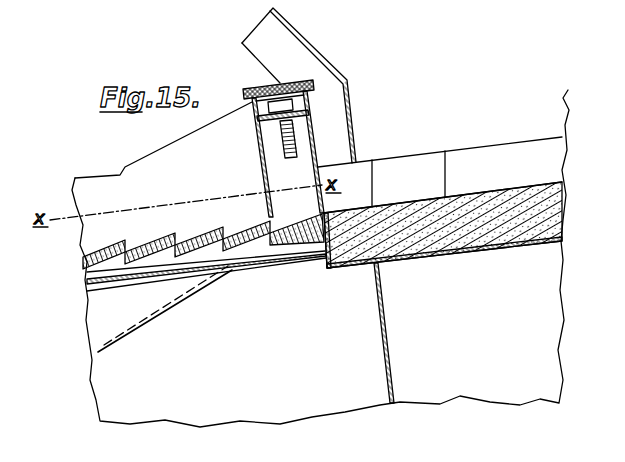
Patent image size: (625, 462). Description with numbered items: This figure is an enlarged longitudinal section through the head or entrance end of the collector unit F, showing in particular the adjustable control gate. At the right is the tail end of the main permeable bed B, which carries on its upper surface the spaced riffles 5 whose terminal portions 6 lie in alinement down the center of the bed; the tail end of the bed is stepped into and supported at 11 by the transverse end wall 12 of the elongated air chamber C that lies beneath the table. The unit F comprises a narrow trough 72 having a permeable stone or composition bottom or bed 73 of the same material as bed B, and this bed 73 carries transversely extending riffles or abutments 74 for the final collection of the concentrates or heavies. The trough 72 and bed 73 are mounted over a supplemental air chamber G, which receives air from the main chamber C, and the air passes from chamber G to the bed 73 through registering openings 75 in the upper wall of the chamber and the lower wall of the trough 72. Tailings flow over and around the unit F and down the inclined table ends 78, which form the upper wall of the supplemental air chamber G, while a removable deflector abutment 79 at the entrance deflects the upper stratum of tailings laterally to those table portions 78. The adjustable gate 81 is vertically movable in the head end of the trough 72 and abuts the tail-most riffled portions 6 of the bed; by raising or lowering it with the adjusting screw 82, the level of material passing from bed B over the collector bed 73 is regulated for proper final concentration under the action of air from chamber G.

The riffles 5 is at (415, 161).
The terminal portions 6 is at (419, 179).
The step support of bed tail end 11 is at (344, 271).
The transverse end wall 12 is at (340, 353).
The trough 72 is at (163, 150).
The bottom or bed 73 is at (83, 262).
The riffles or abutments 74 is at (231, 226).
The registering openings 75 is at (164, 292).
The inclined table ends 78 is at (143, 329).
The deflector abutment 79 is at (318, 48).
The adjustable gate 81 is at (257, 158).
The adjusting screw 82 is at (252, 86).
The collector unit F is at (82, 177).
The supplemental air chamber G is at (219, 358).
The bed B is at (457, 236).
The air chamber C is at (496, 331).